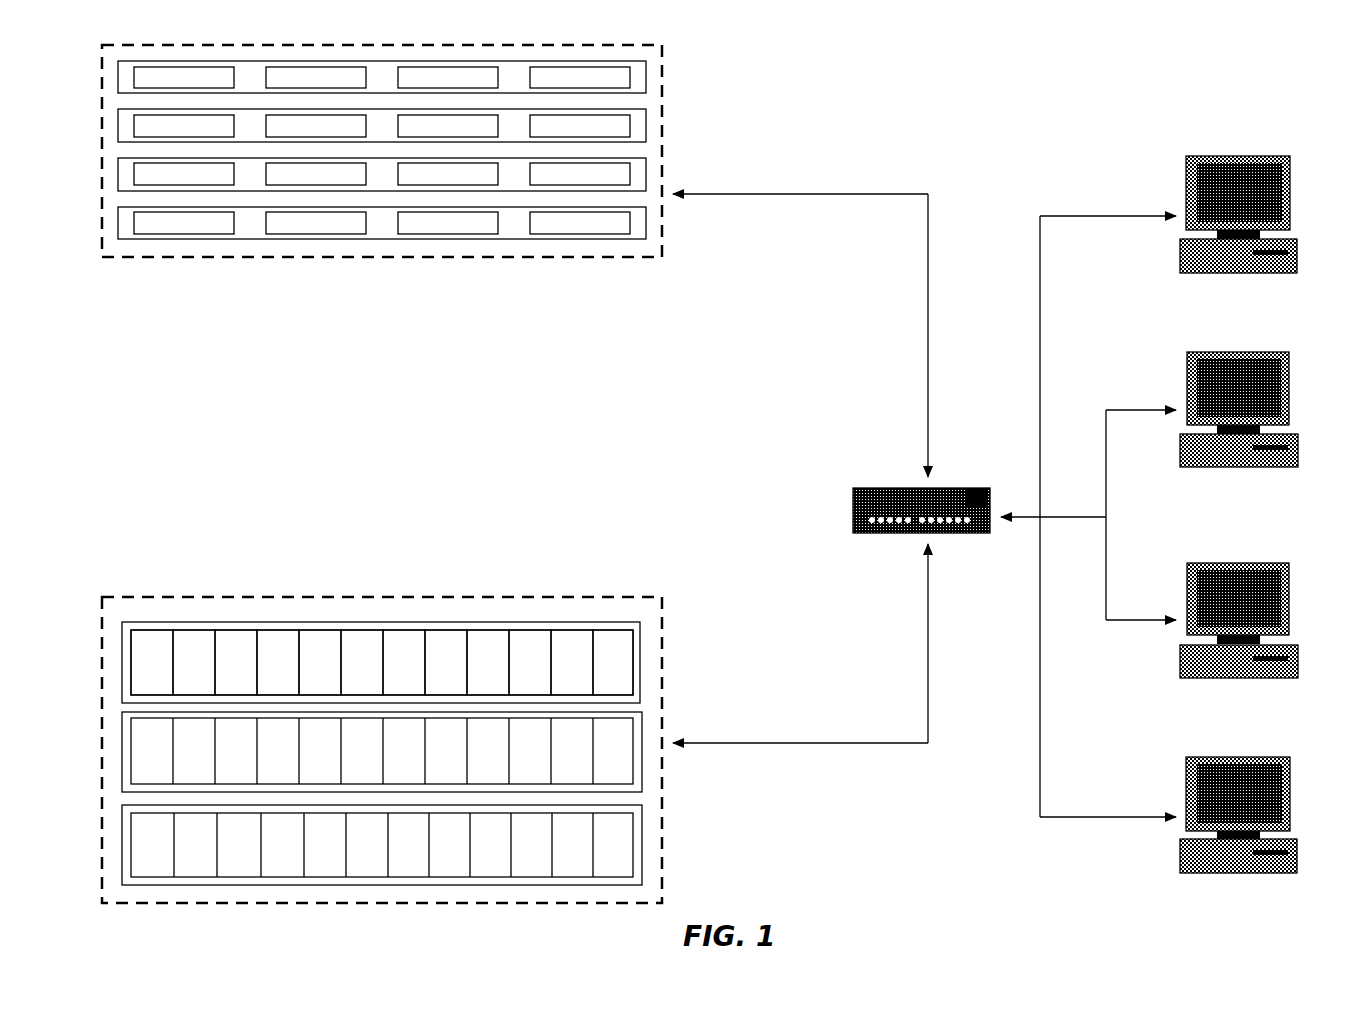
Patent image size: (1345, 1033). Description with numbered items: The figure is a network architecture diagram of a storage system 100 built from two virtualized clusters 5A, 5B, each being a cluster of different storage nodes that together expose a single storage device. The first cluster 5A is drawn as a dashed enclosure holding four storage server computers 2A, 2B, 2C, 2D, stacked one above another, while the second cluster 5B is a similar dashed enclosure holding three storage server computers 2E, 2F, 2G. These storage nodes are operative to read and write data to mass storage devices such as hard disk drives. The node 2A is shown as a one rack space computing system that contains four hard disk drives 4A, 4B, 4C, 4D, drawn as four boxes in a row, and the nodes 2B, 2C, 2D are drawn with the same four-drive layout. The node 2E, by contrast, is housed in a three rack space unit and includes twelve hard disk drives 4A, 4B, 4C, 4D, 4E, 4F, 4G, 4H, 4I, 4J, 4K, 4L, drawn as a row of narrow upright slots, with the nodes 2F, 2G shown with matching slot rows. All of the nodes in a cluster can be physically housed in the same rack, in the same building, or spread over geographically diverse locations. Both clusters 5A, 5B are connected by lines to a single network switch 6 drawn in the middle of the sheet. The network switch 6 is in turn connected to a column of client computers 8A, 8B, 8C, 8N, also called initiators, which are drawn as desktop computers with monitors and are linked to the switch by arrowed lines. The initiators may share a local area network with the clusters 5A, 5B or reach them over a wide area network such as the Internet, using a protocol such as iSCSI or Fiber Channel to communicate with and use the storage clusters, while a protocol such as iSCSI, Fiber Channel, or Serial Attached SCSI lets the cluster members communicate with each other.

The storage system 100 is at (1023, 86).
The virtualized cluster 5A is at (655, 77).
The virtualized cluster 5B is at (648, 620).
The storage server computer 2A is at (637, 88).
The storage server computer 2B is at (637, 140).
The storage server computer 2C is at (637, 190).
The storage server computer 2D is at (637, 238).
The storage server computer 2E is at (638, 648).
The storage server computer 2F is at (642, 722).
The storage server computer 2G is at (642, 812).
The hard disk drive 4A is at (171, 88).
The hard disk drive 4B is at (303, 88).
The hard disk drive 4C is at (435, 88).
The hard disk drive 4D is at (567, 88).
The hard disk drive 4E is at (306, 676).
The hard disk drive 4F is at (348, 676).
The hard disk drive 4G is at (390, 676).
The hard disk drive 4H is at (432, 676).
The hard disk drive 4I is at (476, 676).
The hard disk drive 4J is at (517, 676).
The hard disk drive 4K is at (558, 676).
The hard disk drive 4L is at (600, 676).
The network switch 6 is at (965, 533).
The client computer 8A is at (1277, 273).
The client computer 8B is at (1283, 467).
The client computer 8C is at (1283, 678).
The client computer 8N is at (1283, 873).